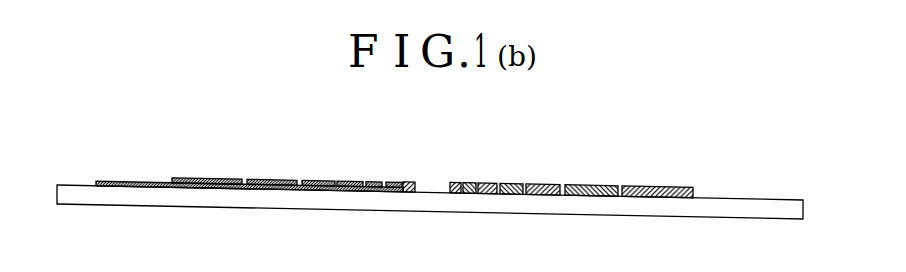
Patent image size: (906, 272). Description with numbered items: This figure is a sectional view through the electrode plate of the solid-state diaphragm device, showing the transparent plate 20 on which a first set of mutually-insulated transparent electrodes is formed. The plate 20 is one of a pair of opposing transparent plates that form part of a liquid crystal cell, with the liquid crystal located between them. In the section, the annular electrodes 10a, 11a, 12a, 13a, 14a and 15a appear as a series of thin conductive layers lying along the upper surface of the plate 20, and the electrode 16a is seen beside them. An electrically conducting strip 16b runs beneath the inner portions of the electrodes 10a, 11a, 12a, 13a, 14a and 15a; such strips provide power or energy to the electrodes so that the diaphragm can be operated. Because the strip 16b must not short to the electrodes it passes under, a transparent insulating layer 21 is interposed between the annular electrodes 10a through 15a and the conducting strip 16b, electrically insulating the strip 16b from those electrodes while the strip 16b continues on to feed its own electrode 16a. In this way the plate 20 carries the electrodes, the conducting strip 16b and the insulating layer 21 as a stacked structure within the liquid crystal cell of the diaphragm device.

The transparent electrode 10a is at (208, 178).
The transparent electrode 11a is at (270, 180).
The transparent electrode 12a is at (317, 181).
The transparent electrode 13a is at (347, 181).
The transparent electrode 14a is at (375, 182).
The transparent electrode 15a is at (395, 182).
The transparent electrode 16a is at (455, 185).
The electrically conducting strip 16b is at (124, 183).
The transparent plate 20 is at (432, 205).
The insulating layer 21 is at (320, 190).